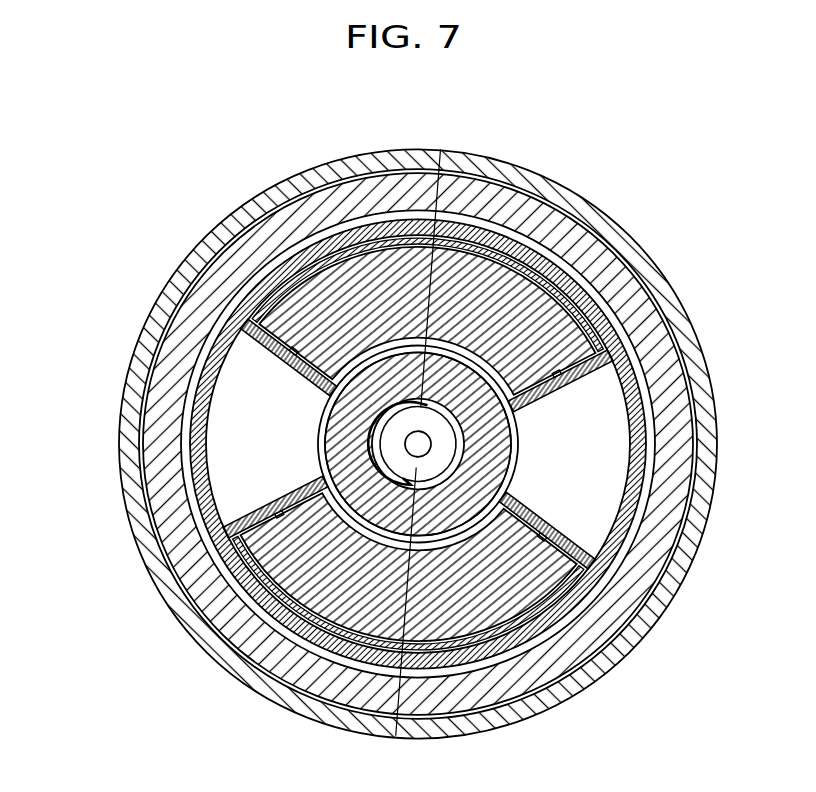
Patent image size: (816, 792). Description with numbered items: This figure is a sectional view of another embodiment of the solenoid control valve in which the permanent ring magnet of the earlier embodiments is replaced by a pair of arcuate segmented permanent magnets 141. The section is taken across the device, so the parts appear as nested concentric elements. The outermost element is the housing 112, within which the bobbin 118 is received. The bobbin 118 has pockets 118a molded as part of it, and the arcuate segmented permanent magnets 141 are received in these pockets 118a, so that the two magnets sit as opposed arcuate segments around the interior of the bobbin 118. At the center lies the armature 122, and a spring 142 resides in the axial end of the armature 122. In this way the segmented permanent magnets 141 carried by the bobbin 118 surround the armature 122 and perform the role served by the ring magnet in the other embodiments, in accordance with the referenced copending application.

The housing 112 is at (697, 363).
The bobbin 118 is at (680, 423).
The pockets 118a is at (570, 303).
The armature 122 is at (618, 352).
The arcuate segmented permanent magnets 141 is at (520, 307).
The spring 142 is at (375, 440).